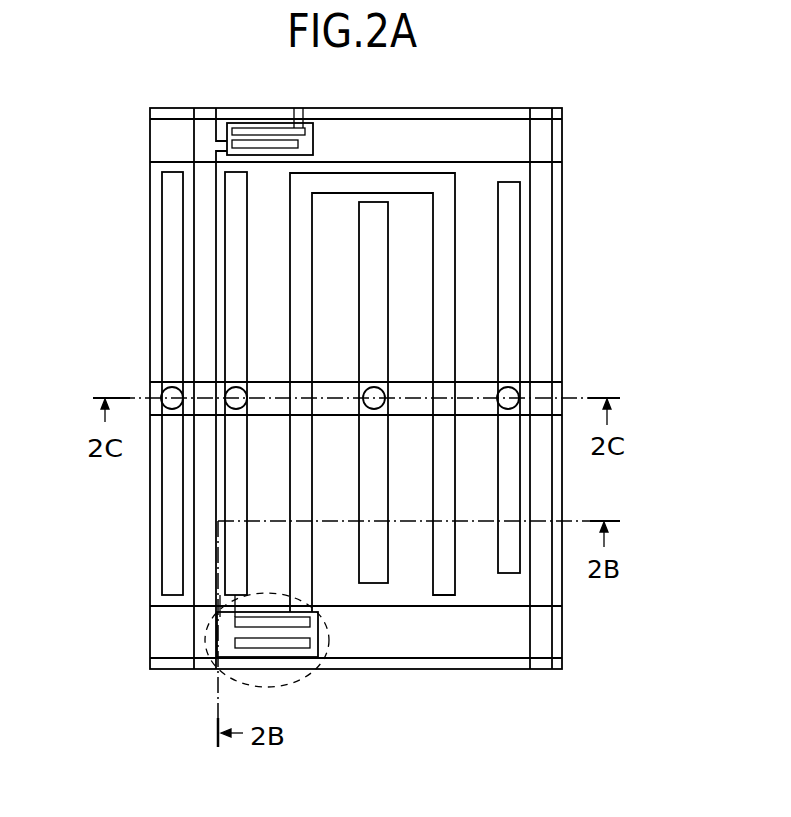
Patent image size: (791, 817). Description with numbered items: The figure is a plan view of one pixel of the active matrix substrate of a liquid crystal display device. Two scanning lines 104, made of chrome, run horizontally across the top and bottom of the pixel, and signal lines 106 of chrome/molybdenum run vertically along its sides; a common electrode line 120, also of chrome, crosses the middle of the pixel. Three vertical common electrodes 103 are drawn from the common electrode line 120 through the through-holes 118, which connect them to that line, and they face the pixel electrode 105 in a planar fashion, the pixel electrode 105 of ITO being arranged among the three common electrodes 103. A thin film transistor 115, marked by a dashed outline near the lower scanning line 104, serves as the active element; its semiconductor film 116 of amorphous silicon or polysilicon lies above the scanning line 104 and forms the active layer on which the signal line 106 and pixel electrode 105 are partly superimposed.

The common electrode 103 is at (240, 258).
The scanning line 104 is at (172, 141).
The pixel electrode 105 is at (442, 493).
The signal line 106 is at (542, 186).
The thin film transistor 115 is at (311, 684).
The semiconductor film 116 is at (313, 632).
The through-hole 118 is at (374, 391).
The common electrode line 120 is at (155, 391).